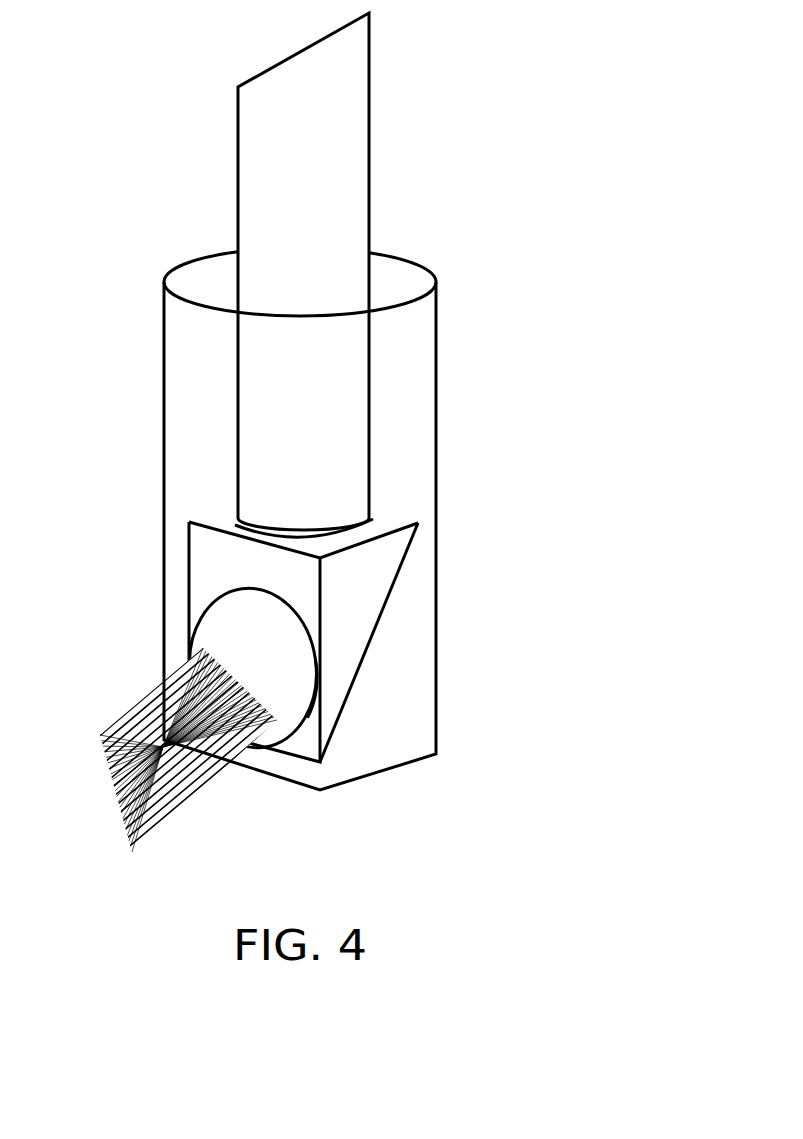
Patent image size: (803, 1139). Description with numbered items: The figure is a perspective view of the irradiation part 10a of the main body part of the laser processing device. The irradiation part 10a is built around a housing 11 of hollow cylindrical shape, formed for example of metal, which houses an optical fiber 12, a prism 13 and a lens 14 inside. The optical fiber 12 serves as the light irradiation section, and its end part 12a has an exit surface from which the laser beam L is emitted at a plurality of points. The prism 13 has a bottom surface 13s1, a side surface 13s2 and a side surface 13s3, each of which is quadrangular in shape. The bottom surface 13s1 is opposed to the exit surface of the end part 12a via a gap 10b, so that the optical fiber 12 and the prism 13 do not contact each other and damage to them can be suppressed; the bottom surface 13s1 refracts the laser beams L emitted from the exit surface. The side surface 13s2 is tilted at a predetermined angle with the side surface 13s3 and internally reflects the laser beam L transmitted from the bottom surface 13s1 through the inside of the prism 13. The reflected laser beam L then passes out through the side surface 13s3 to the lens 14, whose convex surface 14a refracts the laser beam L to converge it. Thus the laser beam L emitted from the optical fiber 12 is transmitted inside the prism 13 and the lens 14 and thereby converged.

The irradiation part 10a is at (513, 117).
The gap 10b is at (375, 508).
The housing 11 is at (423, 423).
The optical fiber 12 is at (250, 153).
The end part 12a is at (232, 473).
The prism 13 is at (337, 665).
The bottom surface 13s1 is at (216, 507).
The side surface 13s2 is at (383, 617).
The side surface 13s3 is at (203, 557).
The lens 14 is at (210, 627).
The convex surface 14a is at (292, 698).
The laser beam L is at (140, 697).